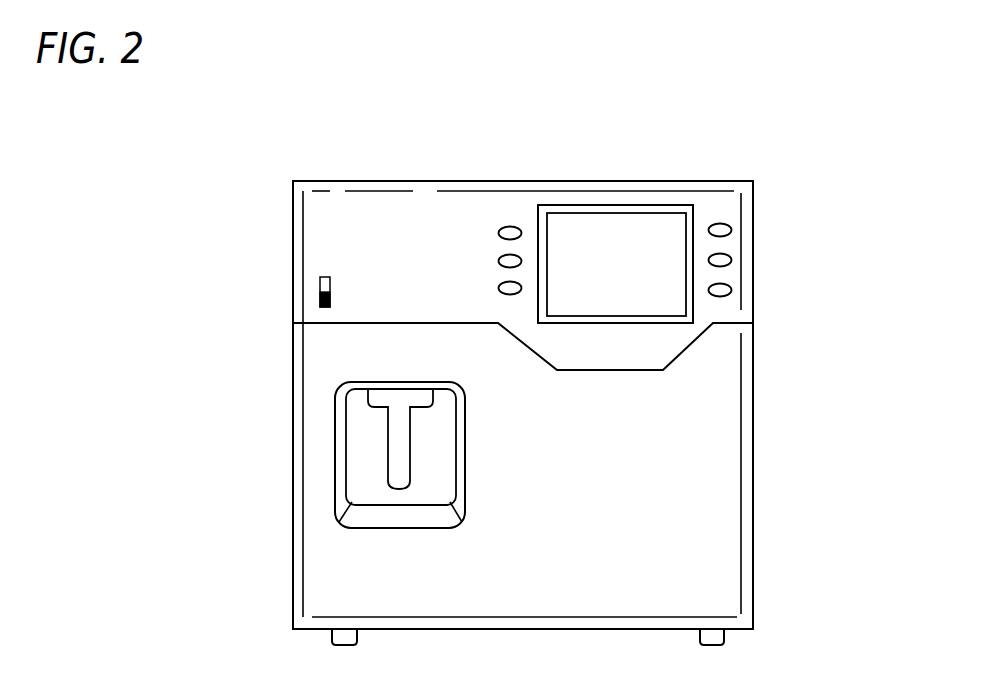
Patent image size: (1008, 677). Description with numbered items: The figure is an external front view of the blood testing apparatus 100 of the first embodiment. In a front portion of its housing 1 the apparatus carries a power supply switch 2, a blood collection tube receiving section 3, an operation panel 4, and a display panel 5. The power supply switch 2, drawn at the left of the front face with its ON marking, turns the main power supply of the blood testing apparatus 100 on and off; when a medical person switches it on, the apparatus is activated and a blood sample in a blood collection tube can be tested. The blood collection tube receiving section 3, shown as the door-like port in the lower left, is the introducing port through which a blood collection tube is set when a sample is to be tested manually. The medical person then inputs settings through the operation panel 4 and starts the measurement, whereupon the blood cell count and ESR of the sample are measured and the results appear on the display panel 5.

The blood testing apparatus 100 is at (199, 163).
The housing 1 is at (293, 211).
The power supply switch 2 is at (320, 291).
The blood collection tube receiving section 3 is at (335, 446).
The operation panel 4 is at (762, 259).
The display panel 5 is at (622, 205).